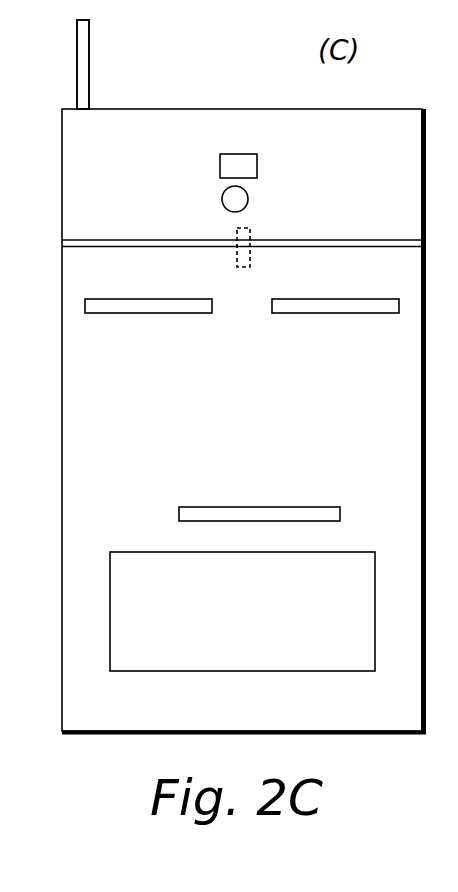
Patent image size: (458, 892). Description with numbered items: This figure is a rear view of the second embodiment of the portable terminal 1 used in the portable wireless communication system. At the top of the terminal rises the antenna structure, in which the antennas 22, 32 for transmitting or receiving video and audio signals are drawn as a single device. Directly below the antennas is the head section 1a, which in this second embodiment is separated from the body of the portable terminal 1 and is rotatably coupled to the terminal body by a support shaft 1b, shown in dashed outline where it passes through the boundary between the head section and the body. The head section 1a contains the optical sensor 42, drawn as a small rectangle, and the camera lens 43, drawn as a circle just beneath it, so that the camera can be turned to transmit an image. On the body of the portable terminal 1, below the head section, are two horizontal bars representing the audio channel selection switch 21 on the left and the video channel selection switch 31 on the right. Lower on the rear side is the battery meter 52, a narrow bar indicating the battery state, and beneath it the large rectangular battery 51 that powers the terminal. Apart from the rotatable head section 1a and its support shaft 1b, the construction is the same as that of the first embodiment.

The portable terminal 1 is at (0, 366).
The head section 1a is at (0, 168).
The support shaft 1b is at (237, 230).
The antenna 22 is at (90, 62).
The antenna 32 is at (83, 64).
The optical sensor 42 is at (224, 166).
The camera lens 43 is at (248, 197).
The audio channel selection switch 21 is at (150, 306).
The video channel selection switch 31 is at (338, 306).
The battery meter 52 is at (262, 513).
The battery 51 is at (259, 623).